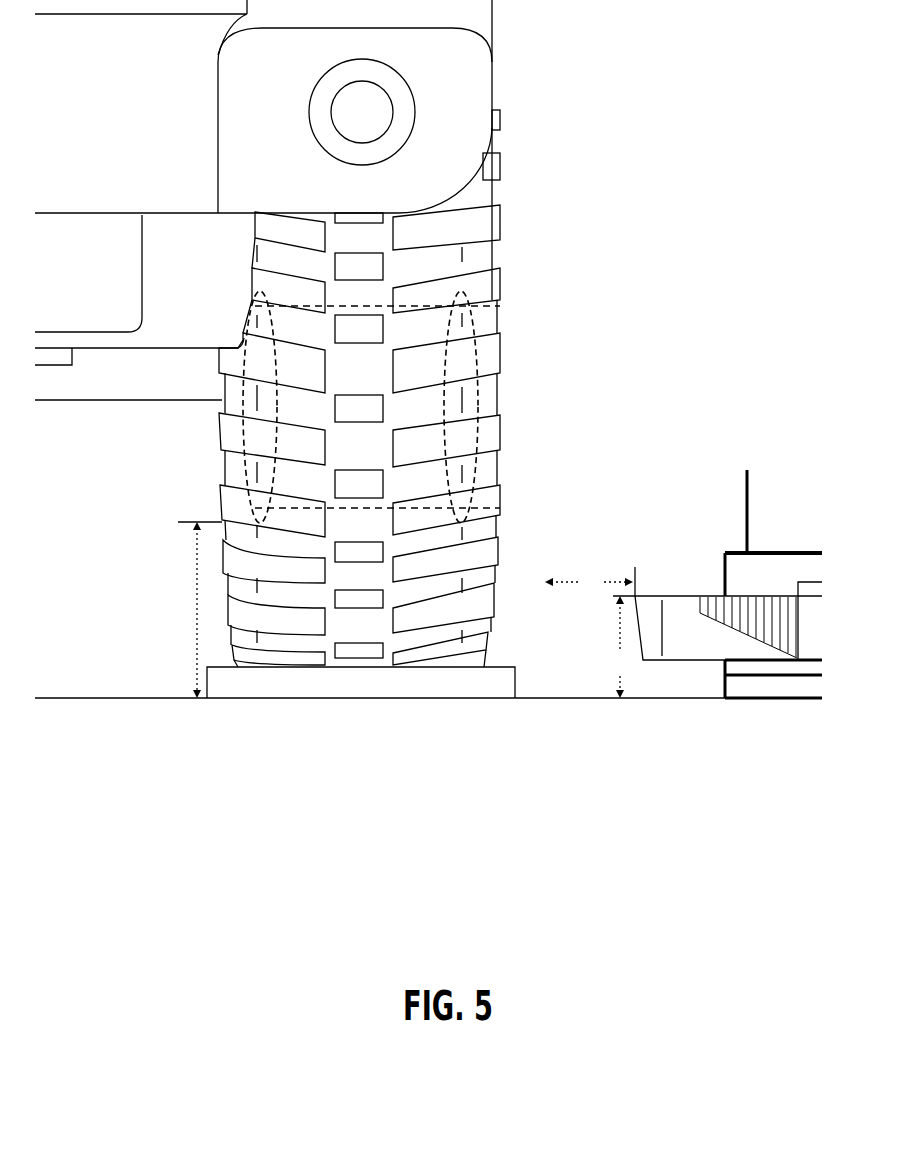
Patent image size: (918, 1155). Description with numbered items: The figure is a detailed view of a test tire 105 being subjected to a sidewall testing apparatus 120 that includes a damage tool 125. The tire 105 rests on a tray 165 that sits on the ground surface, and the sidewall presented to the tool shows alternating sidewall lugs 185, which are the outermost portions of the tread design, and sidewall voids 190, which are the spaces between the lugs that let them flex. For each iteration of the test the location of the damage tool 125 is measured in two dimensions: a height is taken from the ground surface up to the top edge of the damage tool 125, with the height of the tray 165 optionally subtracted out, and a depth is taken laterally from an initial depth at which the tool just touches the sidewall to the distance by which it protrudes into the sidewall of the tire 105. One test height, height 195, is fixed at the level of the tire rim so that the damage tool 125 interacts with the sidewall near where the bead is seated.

The test tire 105 is at (342, 436).
The sidewall testing apparatus 120 is at (683, 603).
The damage tool 125 is at (690, 637).
The tray 165 is at (320, 685).
The sidewall lugs 185 is at (495, 167).
The sidewall voids 190 is at (480, 253).
The height 195 is at (200, 610).